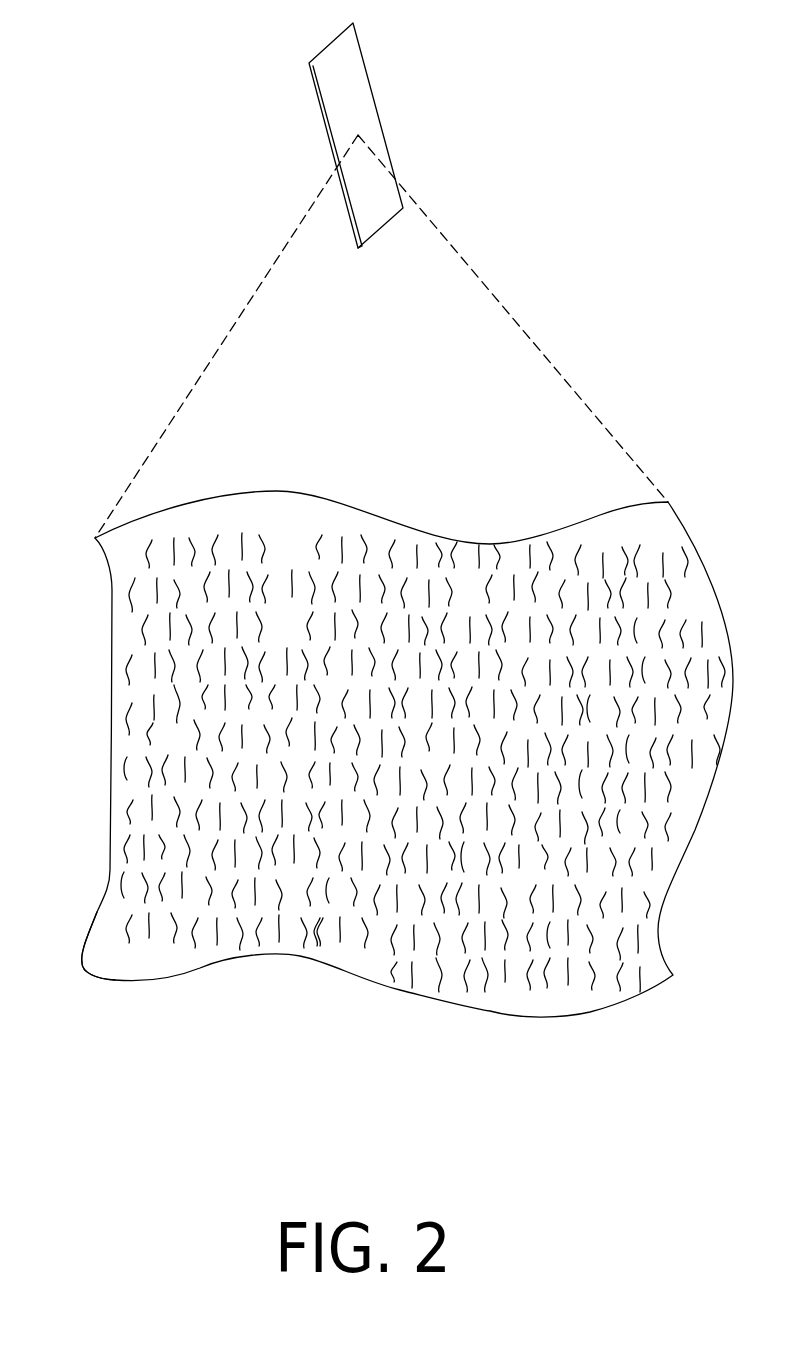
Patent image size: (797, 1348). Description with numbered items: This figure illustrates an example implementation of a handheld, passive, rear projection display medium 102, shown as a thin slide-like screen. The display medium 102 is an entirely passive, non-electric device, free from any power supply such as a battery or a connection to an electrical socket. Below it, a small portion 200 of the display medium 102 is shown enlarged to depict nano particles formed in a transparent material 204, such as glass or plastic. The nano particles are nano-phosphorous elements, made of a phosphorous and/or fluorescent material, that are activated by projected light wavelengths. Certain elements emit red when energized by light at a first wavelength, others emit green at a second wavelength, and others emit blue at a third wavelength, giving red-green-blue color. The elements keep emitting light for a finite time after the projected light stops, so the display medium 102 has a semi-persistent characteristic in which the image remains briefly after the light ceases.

The display medium 102 is at (370, 87).
The small portion 200 is at (365, 503).
The transparent material 204 is at (135, 962).